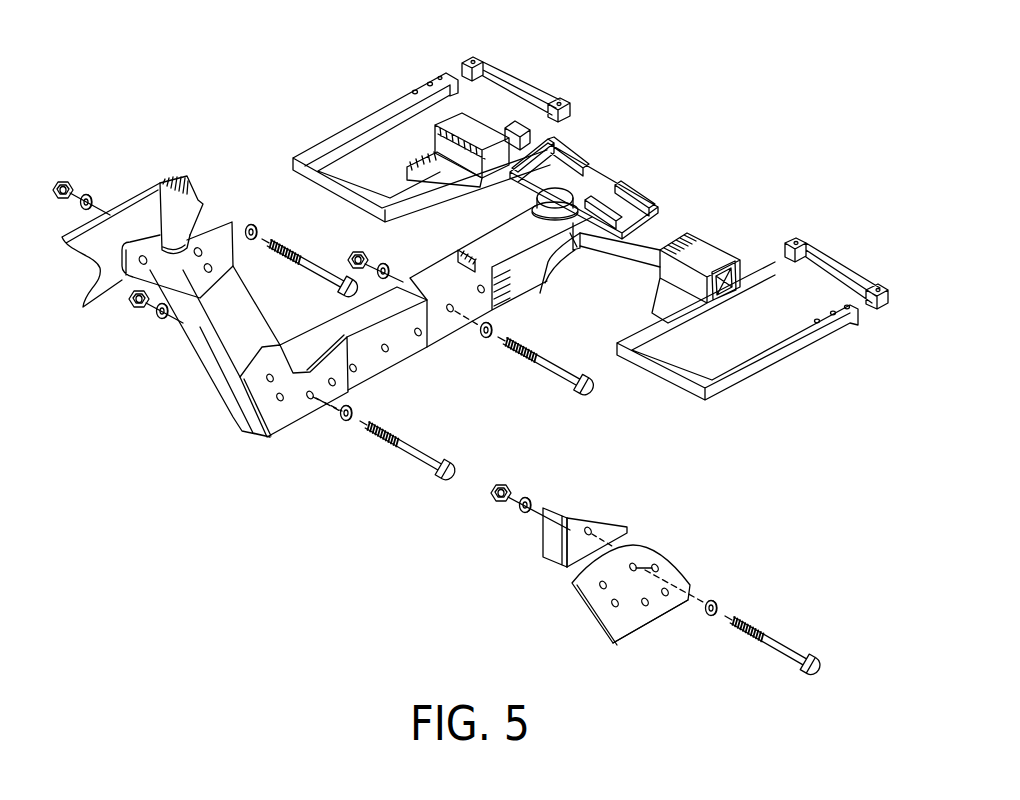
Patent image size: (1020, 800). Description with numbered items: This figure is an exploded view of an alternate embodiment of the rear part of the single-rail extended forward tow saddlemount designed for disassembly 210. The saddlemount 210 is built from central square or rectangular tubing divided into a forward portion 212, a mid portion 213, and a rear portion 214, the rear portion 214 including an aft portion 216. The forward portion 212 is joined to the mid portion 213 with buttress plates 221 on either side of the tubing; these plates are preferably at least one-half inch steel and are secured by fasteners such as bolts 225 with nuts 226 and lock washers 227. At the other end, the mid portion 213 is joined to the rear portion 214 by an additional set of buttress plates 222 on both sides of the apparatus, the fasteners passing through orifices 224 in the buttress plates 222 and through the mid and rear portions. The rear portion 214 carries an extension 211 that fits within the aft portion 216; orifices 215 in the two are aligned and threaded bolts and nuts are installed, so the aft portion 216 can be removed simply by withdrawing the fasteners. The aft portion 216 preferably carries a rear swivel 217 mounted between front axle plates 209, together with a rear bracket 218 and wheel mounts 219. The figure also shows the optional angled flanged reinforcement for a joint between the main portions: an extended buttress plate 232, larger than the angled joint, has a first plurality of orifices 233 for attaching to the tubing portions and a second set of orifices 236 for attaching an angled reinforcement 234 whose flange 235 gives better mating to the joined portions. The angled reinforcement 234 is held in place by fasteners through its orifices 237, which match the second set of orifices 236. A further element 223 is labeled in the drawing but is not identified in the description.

The front axle plates 209 is at (615, 178).
The single-rail extended forward tow saddlemount designed for disassembly 210 is at (231, 470).
The extension 211 is at (420, 273).
The forward portion 212 is at (190, 182).
The mid portion 213 is at (230, 358).
The rear portion 214 is at (418, 358).
The orifices 215 is at (453, 309).
The aft portion 216 is at (494, 207).
The rear swivel 217 is at (560, 190).
The rear bracket 218 is at (670, 232).
The wheel mounts 219 is at (519, 58).
The buttress plates 221 is at (168, 238).
The buttress plates 222 is at (283, 423).
The base plate 223 is at (208, 232).
The orifices 224 is at (310, 399).
The bolts 225 is at (283, 248).
The nuts 226 is at (66, 181).
The lock washers 227 is at (92, 196).
The extended buttress plate 232 is at (637, 628).
The first plurality of orifices 233 is at (610, 622).
The angled reinforcement 234 is at (569, 520).
The flange 235 is at (540, 540).
The second set of orifices 236 is at (658, 563).
The orifices 237 is at (607, 522).